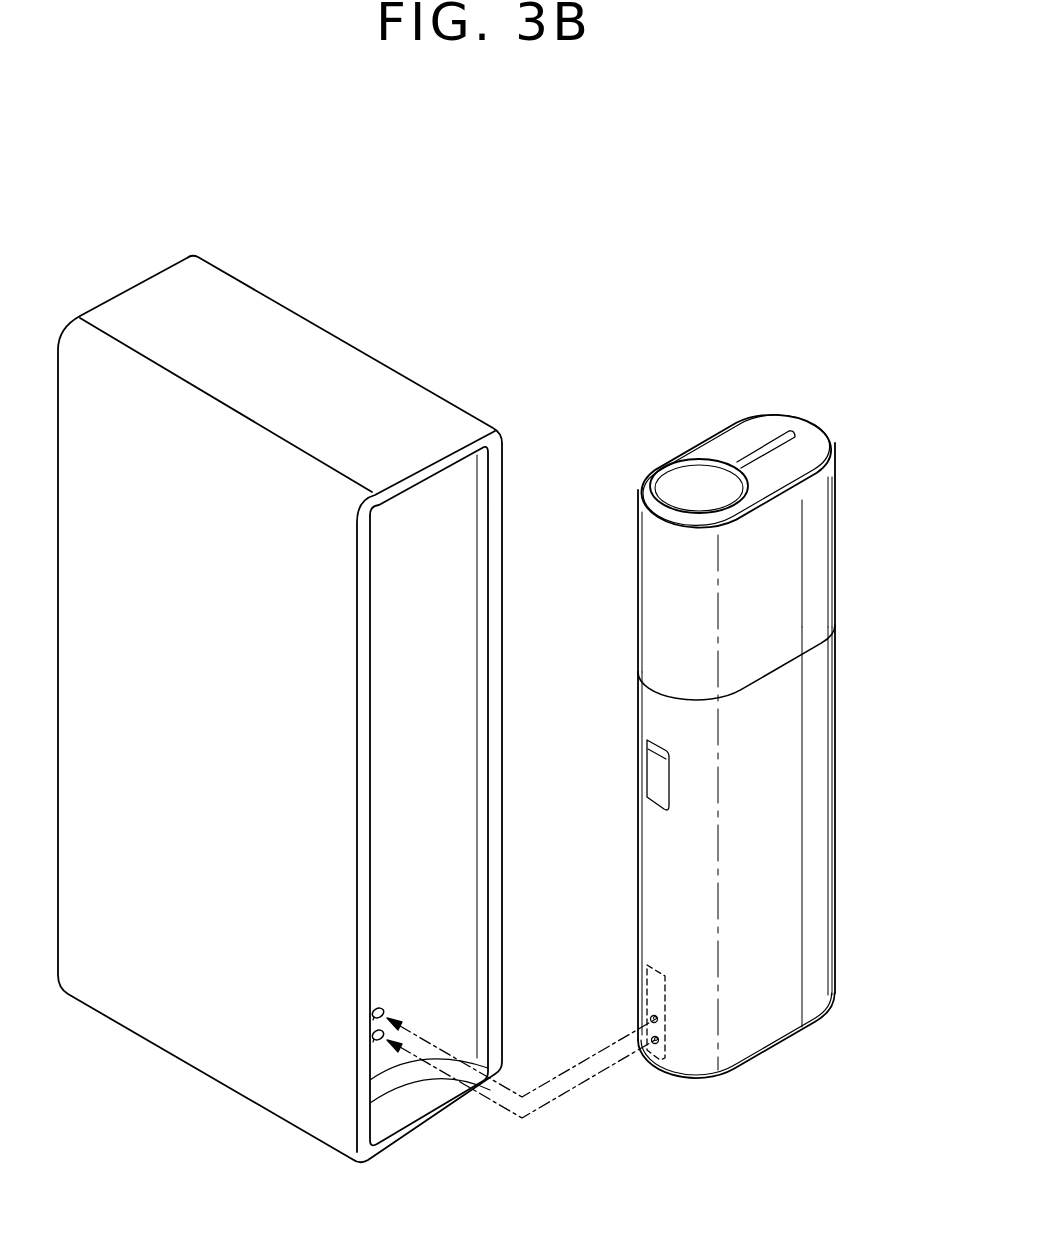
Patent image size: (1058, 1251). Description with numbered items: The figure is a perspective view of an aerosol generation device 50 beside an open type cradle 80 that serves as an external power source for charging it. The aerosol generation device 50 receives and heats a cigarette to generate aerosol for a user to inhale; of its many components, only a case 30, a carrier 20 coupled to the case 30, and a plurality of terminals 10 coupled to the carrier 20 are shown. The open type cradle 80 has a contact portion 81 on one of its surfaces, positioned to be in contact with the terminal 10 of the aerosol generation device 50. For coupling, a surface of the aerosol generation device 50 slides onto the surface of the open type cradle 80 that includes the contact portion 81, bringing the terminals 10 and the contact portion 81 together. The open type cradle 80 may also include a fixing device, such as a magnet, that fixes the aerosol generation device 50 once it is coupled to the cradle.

The terminal 10 is at (655, 1044).
The carrier 20 is at (648, 979).
The case 30 is at (842, 738).
The aerosol generation device 50 is at (851, 503).
The open type cradle 80 is at (459, 397).
The contact portion 81 is at (387, 1013).